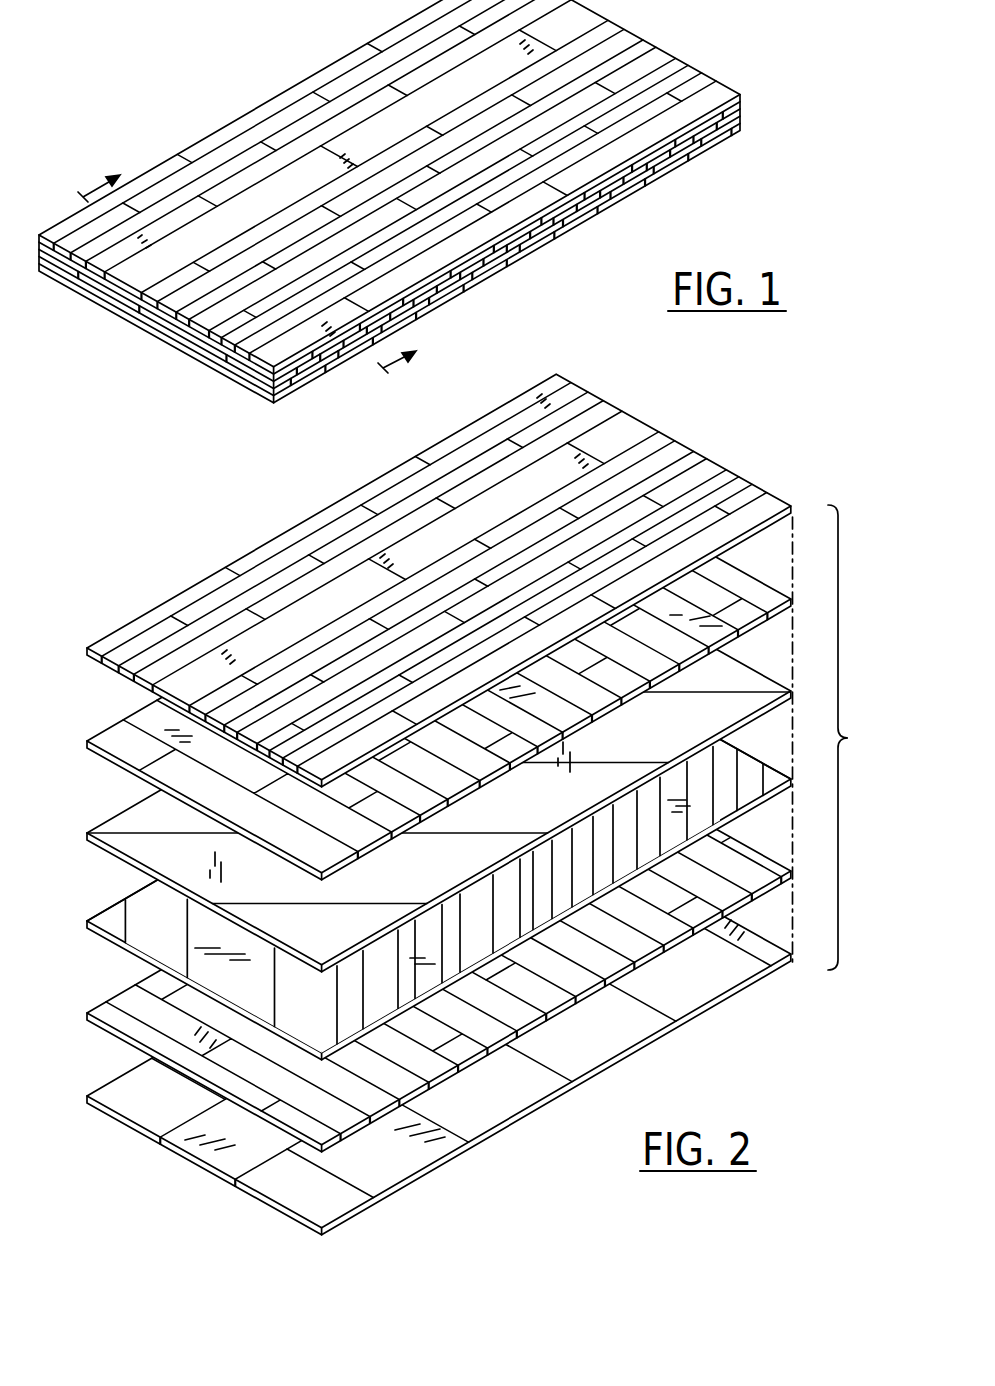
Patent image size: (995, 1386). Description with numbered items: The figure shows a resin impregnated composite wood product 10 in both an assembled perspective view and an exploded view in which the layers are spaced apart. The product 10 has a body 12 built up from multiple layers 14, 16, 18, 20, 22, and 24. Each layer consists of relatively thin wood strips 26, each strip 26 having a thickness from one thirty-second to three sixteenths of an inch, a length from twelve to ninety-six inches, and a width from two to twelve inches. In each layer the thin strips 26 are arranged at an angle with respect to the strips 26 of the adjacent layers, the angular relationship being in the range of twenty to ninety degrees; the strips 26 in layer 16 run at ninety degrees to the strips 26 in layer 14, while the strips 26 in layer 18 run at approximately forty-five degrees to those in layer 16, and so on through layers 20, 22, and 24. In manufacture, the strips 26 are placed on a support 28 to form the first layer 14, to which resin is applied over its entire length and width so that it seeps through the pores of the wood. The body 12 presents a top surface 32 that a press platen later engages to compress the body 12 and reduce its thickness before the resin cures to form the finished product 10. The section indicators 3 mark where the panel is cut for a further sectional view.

In FIG. 1, the resin impregnated composite wood product 10 is at (395, 213).
In FIG. 1, the body 12 is at (255, 380).
In FIG. 2, the layer 14 is at (115, 1103).
In FIG. 2, the layer 16 is at (416, 997).
In FIG. 2, the layer 18 is at (135, 912).
In FIG. 2, the layer 20 is at (128, 818).
In FIG. 2, the layer 22 is at (115, 743).
In FIG. 2, the layer 24 is at (416, 580).
In FIG. 2, the relatively thin wood strips 26 is at (170, 1037).
In FIG. 2, the support 28 is at (770, 1000).
In FIG. 1, the top surface 32 is at (390, 56).
In FIG. 2, the top surface 32 is at (628, 425).
In FIG. 1, the section line 3- 3 is at (85, 392).